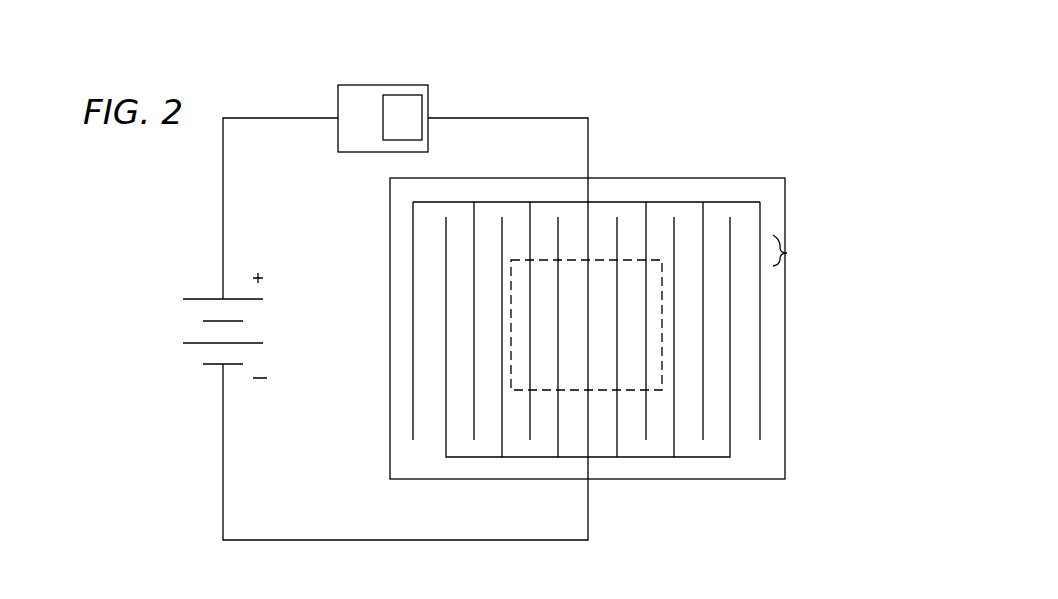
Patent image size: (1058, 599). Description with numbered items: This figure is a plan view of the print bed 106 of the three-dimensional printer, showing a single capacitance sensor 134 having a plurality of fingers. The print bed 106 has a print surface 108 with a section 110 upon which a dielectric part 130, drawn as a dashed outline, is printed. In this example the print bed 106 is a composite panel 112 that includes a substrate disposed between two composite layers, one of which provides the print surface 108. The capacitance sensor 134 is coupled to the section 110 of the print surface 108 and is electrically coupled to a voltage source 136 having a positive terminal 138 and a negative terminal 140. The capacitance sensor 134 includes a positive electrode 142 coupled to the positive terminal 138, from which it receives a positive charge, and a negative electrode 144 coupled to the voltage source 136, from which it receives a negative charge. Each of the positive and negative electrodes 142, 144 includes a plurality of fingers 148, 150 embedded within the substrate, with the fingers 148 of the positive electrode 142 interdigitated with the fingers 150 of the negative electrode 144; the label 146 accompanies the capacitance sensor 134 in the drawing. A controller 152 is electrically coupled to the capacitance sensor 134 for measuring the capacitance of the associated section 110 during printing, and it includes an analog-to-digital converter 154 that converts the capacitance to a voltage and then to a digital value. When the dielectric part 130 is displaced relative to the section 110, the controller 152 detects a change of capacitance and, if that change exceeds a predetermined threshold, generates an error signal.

The print bed 106 is at (573, 311).
The print surface 108 is at (573, 311).
The section 110 is at (787, 253).
The composite panel 112 is at (780, 178).
The dielectric part 130 is at (662, 373).
The capacitance sensor 134 is at (501, 183).
The voltage source 136 is at (164, 328).
The positive terminal 138 is at (193, 298).
The negative terminal 140 is at (210, 364).
The positive electrode 142 is at (586, 251).
The negative electrode 144 is at (667, 392).
The first electrode bus 146 is at (402, 196).
The fingers of the positive electrode 148 is at (760, 218).
The fingers of the negative electrode 150 is at (677, 439).
The controller 152 is at (345, 81).
The analog-to-digital converter 154 is at (412, 95).